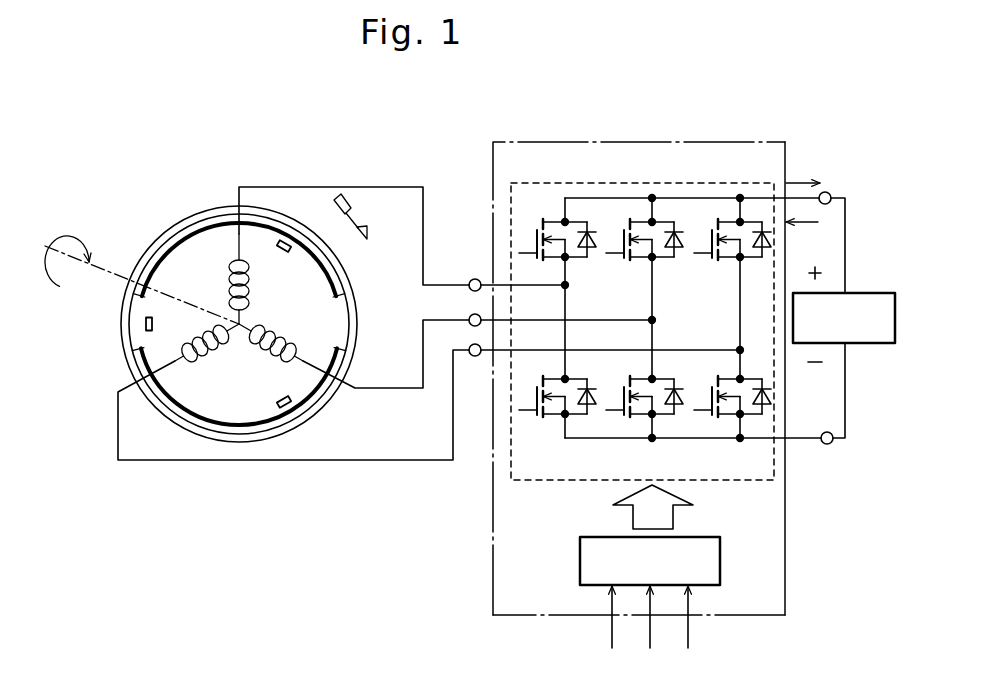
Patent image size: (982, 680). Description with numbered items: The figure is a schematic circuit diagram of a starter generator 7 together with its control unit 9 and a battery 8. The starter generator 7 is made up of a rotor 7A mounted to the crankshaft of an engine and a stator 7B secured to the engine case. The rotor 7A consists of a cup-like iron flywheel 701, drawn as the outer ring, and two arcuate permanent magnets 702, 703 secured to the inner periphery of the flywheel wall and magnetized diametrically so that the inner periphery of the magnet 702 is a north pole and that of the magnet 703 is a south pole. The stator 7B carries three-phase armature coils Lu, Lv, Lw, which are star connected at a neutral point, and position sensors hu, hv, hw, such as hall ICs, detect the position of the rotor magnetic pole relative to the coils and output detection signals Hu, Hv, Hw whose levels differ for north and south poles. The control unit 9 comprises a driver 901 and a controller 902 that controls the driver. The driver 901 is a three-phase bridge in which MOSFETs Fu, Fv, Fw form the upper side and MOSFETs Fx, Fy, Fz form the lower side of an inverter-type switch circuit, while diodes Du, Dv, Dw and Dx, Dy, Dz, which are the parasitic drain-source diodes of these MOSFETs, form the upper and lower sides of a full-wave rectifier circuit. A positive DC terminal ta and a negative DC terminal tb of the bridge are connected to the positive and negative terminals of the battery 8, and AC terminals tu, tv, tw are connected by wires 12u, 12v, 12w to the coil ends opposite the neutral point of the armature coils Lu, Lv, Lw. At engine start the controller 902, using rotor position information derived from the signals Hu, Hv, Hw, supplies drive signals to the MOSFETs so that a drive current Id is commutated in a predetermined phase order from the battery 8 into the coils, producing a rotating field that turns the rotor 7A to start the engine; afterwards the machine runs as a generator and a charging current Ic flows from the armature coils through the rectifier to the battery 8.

The starter generator 7 is at (184, 203).
The rotor 7A is at (208, 208).
The stator 7B is at (226, 265).
The flywheel 701 is at (122, 308).
The permanent magnet 702 is at (142, 258).
The permanent magnet 703 is at (162, 390).
The position sensor hu is at (143, 324).
The position sensor hv is at (284, 242).
The position sensor hw is at (288, 406).
The armature coil Lu is at (230, 279).
The armature coil Lv is at (282, 330).
The armature coil Lw is at (200, 350).
The wire 12u is at (345, 187).
The wire 12v is at (363, 388).
The wire 12w is at (345, 460).
The AC terminal tu is at (469, 282).
The AC terminal tv is at (469, 318).
The AC terminal tw is at (475, 357).
The control unit 9 is at (706, 140).
The driver 901 is at (524, 182).
The controller 902 is at (580, 565).
The battery 8 is at (862, 293).
The MOSFET Fu is at (566, 230).
The MOSFET Fv is at (653, 230).
The MOSFET Fw is at (741, 230).
The MOSFET Fx is at (563, 419).
The MOSFET Fy is at (650, 419).
The MOSFET Fz is at (738, 419).
The diode Du is at (596, 262).
The diode Dv is at (682, 262).
The diode Dw is at (771, 262).
The diode Dx is at (593, 388).
The diode Dy is at (680, 388).
The diode Dz is at (767, 388).
The charging current Ic is at (803, 174).
The drive current Id is at (802, 236).
The positive DC terminal ta is at (831, 194).
The negative DC terminal tb is at (830, 446).
The detection signal Hu is at (692, 629).
The detection signal Hv is at (651, 629).
The detection signal Hw is at (611, 629).